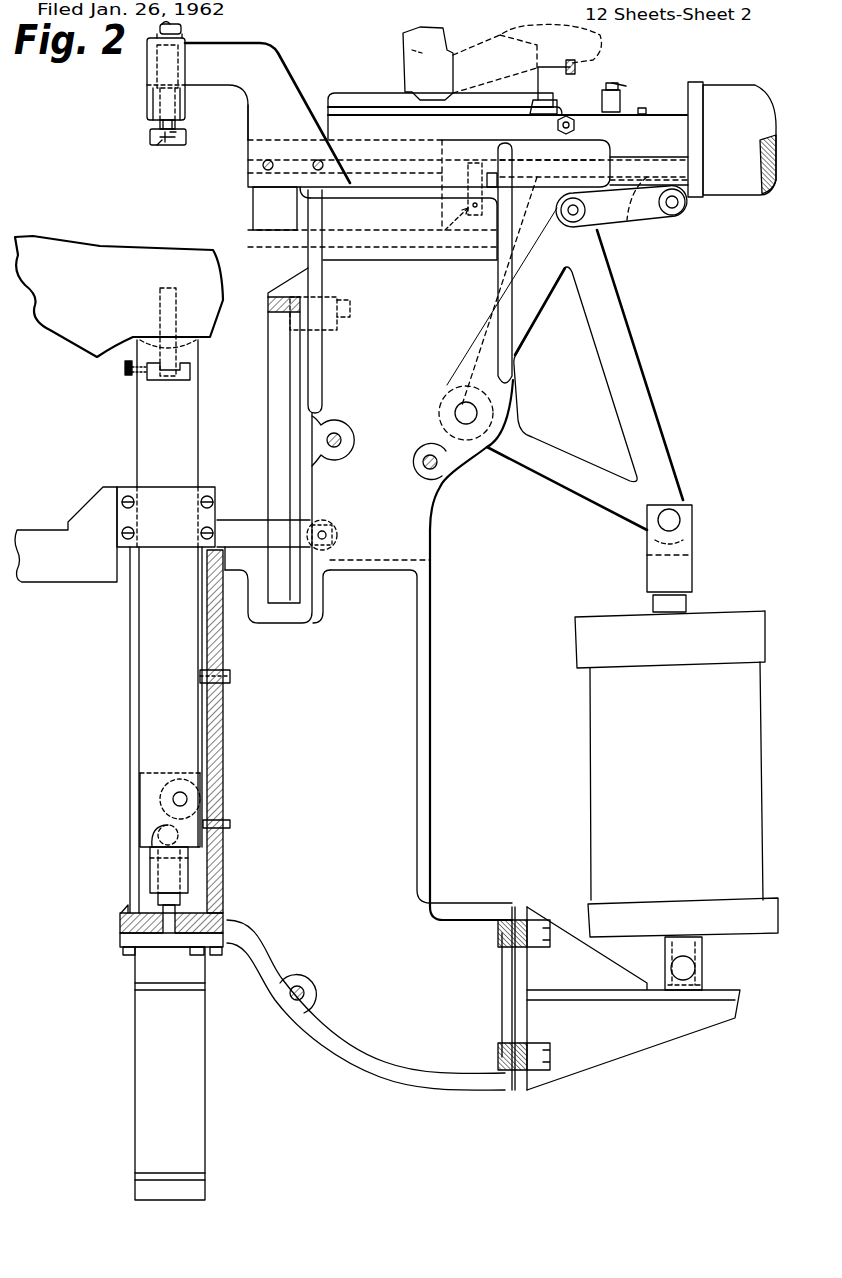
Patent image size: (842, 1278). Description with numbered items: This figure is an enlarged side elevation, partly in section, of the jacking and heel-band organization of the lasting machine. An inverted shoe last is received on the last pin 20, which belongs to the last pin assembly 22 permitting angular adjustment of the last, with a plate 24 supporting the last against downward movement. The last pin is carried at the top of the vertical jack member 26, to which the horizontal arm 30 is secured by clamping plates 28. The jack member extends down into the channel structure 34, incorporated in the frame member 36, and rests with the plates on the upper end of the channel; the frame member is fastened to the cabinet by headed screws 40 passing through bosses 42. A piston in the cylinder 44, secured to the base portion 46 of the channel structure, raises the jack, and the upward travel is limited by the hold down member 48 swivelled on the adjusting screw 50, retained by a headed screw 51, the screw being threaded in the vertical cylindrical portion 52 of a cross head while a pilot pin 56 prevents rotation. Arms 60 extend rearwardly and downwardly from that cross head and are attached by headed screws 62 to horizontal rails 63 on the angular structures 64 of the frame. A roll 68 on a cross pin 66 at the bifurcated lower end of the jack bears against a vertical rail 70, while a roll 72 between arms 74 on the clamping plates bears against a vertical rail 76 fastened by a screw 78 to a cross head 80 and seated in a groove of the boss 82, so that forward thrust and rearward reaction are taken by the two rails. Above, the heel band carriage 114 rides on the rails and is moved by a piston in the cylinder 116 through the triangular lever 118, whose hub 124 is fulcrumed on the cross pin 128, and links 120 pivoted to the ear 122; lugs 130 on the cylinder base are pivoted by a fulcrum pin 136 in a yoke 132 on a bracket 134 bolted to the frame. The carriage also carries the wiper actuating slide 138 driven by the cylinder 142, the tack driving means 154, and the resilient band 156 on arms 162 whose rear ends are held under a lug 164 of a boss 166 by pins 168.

The last pin 20 is at (158, 310).
The last pin assembly 22 is at (117, 380).
The plate 24 is at (200, 342).
The jack member 26 is at (148, 431).
The clamping plates 28 is at (155, 488).
The horizontal arm 30 is at (56, 572).
The channel structure 34 is at (225, 748).
The frame member 36 is at (428, 782).
The headed screws 40 is at (338, 432).
The bosses 42 is at (337, 461).
The cylinder 44 is at (145, 1101).
The base portion 46 is at (145, 917).
The hold down member 48 is at (187, 138).
The adjusting screw 50 is at (183, 30).
The headed screw 51 is at (160, 147).
The vertical cylindrical portion 52 is at (145, 72).
The pilot pin 56 is at (158, 126).
The arms 60 is at (213, 81).
The headed screws 62 is at (318, 160).
The horizontal rails 63 is at (340, 118).
The angular structures 64 is at (306, 252).
The cross pin 66 is at (172, 799).
The roll 68 is at (167, 780).
The vertical rail 70 is at (210, 711).
The roll 72 is at (338, 538).
The arms 74 is at (247, 520).
The vertical rail 76 is at (268, 450).
The screw 78 is at (352, 300).
The cross head 80 is at (290, 318).
The boss 82 is at (283, 621).
The heel band carriage 114 is at (683, 145).
The cylinder 116 is at (600, 813).
The triangular lever 118 is at (644, 373).
The links 120 is at (623, 236).
The ear 122 is at (642, 228).
The hub 124 is at (495, 413).
The cross pin 128 is at (462, 405).
The lugs 130 is at (679, 942).
The yoke 132 is at (698, 950).
The bracket 134 is at (655, 1038).
The fulcrum pin 136 is at (697, 969).
The wiper actuating slide 138 is at (535, 100).
The cylinder 142 is at (730, 92).
The tack driving means 154 is at (410, 48).
The resilient band 156 is at (258, 211).
The arms 162 is at (376, 203).
The lug 164 is at (460, 222).
The boss 166 is at (518, 187).
The pin 168 is at (468, 188).